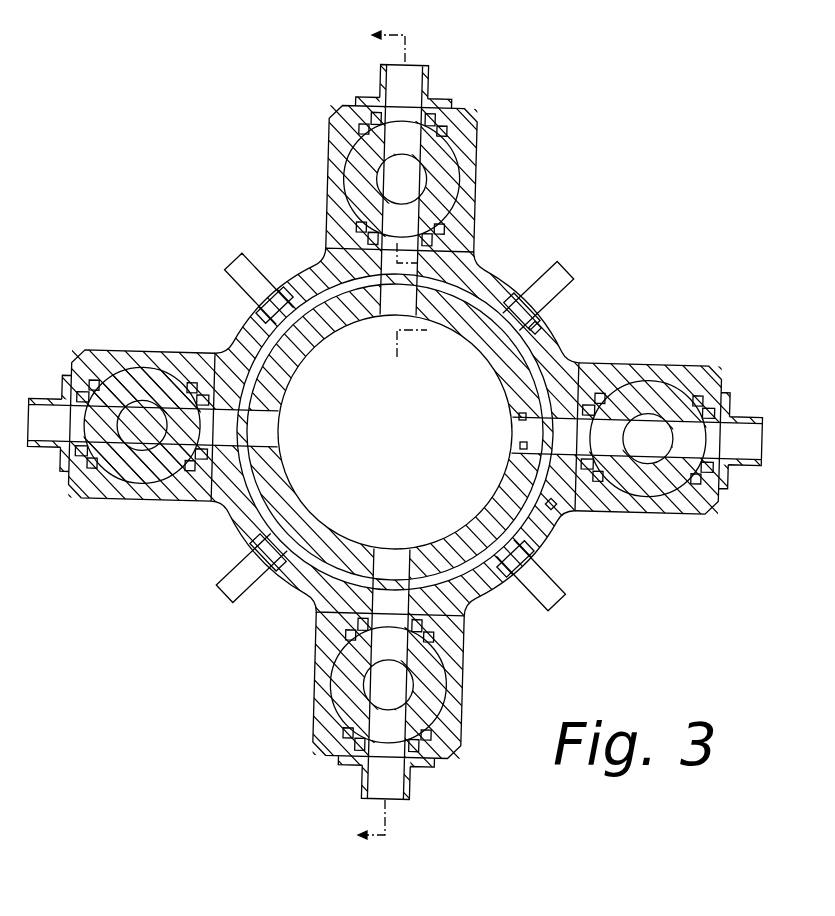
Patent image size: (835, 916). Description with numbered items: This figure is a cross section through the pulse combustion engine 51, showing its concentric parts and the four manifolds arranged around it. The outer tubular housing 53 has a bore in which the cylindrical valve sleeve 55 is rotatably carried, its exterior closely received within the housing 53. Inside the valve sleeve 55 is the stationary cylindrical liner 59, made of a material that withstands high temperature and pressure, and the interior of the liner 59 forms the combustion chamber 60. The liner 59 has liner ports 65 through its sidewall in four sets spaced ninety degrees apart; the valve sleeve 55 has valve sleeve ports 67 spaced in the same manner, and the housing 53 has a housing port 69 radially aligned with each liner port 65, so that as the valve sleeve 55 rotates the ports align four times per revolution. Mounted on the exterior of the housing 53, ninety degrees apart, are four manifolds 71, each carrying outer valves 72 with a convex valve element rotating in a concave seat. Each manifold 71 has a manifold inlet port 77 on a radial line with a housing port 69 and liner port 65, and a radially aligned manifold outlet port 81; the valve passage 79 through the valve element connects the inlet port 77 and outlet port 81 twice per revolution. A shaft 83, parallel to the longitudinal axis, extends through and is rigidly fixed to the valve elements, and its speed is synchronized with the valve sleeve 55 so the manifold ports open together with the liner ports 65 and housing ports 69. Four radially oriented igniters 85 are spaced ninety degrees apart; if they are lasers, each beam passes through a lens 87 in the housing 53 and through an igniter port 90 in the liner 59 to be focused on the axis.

The pulse combustion engine 51 is at (556, 168).
The housing 53 is at (473, 277).
The valve sleeve 55 is at (556, 357).
The liner 59 is at (510, 378).
The combustion chamber 60 is at (393, 481).
The liner ports 65 is at (520, 446).
The valve sleeve ports 67 is at (519, 421).
The housing port 69 is at (553, 507).
The manifold 71 is at (682, 507).
The outer valve 72 is at (155, 486).
The manifold inlet port 77 is at (402, 783).
The valve passage 79 is at (402, 722).
The manifold outlet port 81 is at (405, 611).
The shaft 83 is at (408, 686).
The igniter 85 is at (578, 271).
The lens 87 is at (538, 328).
The igniter port 90 is at (478, 347).